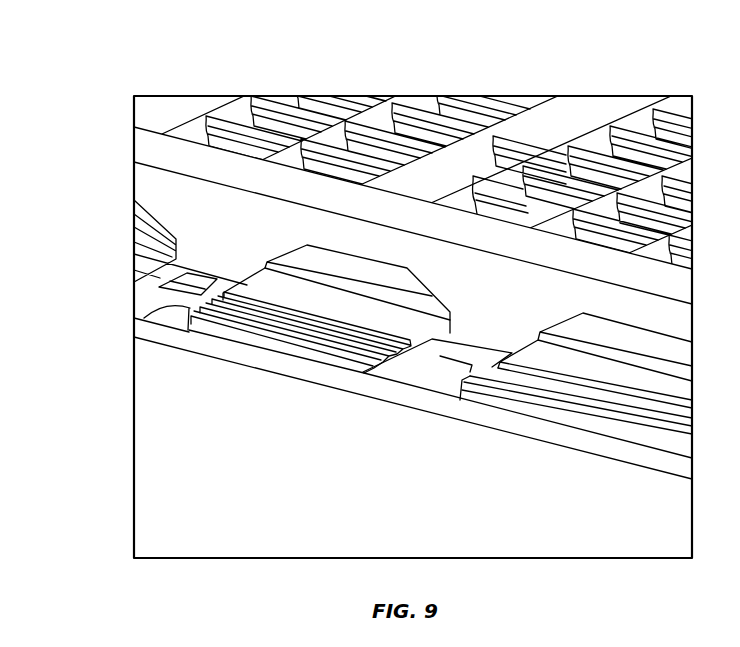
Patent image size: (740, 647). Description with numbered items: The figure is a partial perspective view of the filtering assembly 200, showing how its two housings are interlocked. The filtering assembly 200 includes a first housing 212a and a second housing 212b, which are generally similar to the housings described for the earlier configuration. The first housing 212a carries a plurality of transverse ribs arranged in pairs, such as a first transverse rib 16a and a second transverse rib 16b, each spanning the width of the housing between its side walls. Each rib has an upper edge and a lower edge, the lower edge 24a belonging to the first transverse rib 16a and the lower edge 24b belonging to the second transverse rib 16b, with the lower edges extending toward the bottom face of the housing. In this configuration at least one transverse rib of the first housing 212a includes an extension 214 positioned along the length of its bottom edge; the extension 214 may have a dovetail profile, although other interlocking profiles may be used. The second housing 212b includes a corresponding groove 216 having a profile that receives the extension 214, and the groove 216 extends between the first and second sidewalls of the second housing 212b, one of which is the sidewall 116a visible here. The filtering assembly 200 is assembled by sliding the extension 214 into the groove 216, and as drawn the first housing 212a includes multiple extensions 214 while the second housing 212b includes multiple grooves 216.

The filtering assembly 200 is at (543, 53).
The first housing 212a is at (143, 183).
The second housing 212b is at (138, 295).
The first sidewall 116a is at (235, 350).
The extension 214 is at (363, 377).
The groove 216 is at (143, 257).
The lower edge of first transverse rib 24a is at (249, 286).
The first transverse rib 16a is at (284, 262).
The lower edge of second transverse rib 24b is at (423, 337).
The second transverse rib 16b is at (445, 290).